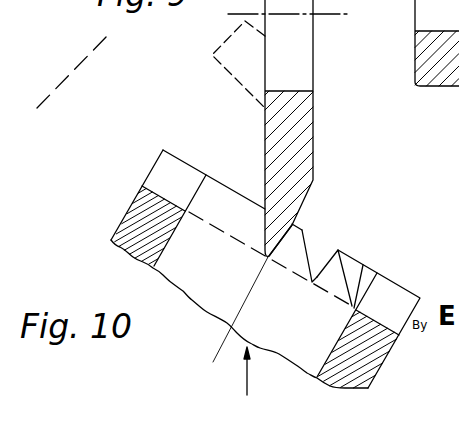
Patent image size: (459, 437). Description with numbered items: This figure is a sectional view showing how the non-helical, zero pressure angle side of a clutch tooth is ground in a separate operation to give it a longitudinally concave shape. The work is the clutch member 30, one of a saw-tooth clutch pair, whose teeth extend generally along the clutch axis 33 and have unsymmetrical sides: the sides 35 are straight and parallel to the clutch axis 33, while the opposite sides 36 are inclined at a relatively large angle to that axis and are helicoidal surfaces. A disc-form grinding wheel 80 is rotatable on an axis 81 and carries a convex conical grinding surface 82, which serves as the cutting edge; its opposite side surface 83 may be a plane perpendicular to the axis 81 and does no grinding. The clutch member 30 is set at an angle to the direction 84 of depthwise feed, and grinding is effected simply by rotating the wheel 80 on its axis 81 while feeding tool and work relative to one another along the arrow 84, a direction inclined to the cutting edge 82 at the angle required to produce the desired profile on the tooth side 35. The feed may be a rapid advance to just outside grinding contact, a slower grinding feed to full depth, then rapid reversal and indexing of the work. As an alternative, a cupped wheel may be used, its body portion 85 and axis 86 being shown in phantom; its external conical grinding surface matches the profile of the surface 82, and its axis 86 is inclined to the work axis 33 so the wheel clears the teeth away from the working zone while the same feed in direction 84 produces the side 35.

The clutch member 30 is at (203, 302).
The clutch axis 33 is at (246, 312).
The tooth sides 35 is at (274, 249).
The opposite tooth sides 36 is at (310, 258).
The grinding wheel 80 is at (308, 168).
The wheel axis 81 is at (298, 15).
The convex conical grinding surface 82 is at (295, 215).
The side surface 83 is at (265, 226).
The direction of depthwise feed movement 84 is at (248, 372).
The body portion of cupped wheel 85 is at (242, 72).
The cupped wheel axis 86 is at (63, 80).